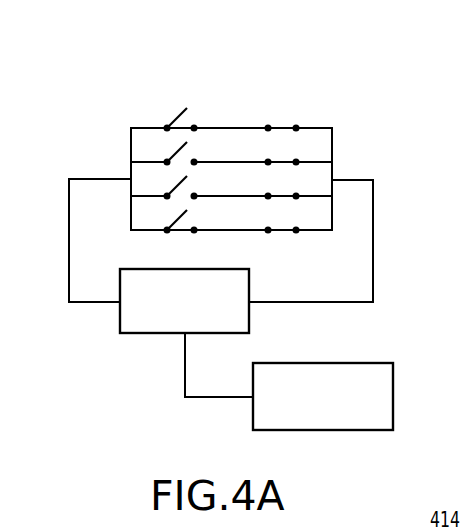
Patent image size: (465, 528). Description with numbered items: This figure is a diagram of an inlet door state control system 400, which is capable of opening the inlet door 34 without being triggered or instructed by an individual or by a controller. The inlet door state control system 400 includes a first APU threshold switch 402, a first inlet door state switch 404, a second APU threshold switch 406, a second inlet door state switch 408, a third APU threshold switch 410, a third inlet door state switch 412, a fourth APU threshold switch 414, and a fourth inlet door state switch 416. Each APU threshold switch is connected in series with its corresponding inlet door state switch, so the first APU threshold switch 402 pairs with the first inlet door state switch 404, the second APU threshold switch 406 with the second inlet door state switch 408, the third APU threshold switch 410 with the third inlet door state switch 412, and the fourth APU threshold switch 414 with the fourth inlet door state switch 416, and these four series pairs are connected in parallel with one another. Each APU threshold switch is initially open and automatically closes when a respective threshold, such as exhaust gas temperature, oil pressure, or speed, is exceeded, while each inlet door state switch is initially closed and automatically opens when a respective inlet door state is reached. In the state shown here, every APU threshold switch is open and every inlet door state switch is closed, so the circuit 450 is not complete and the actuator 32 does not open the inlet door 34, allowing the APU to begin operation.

The inlet door state control system 400 is at (363, 70).
The first APU threshold switch 402 is at (173, 110).
The first inlet door state switch 404 is at (283, 120).
The second APU threshold switch 406 is at (169, 144).
The second inlet door state switch 408 is at (288, 148).
The third APU threshold switch 410 is at (169, 177).
The third inlet door state switch 412 is at (285, 190).
The fourth APU threshold switch 414 is at (169, 211).
The fourth inlet door state switch 416 is at (285, 227).
The circuit 450 is at (373, 255).
The actuator 32 is at (120, 322).
The inlet door 34 is at (370, 363).